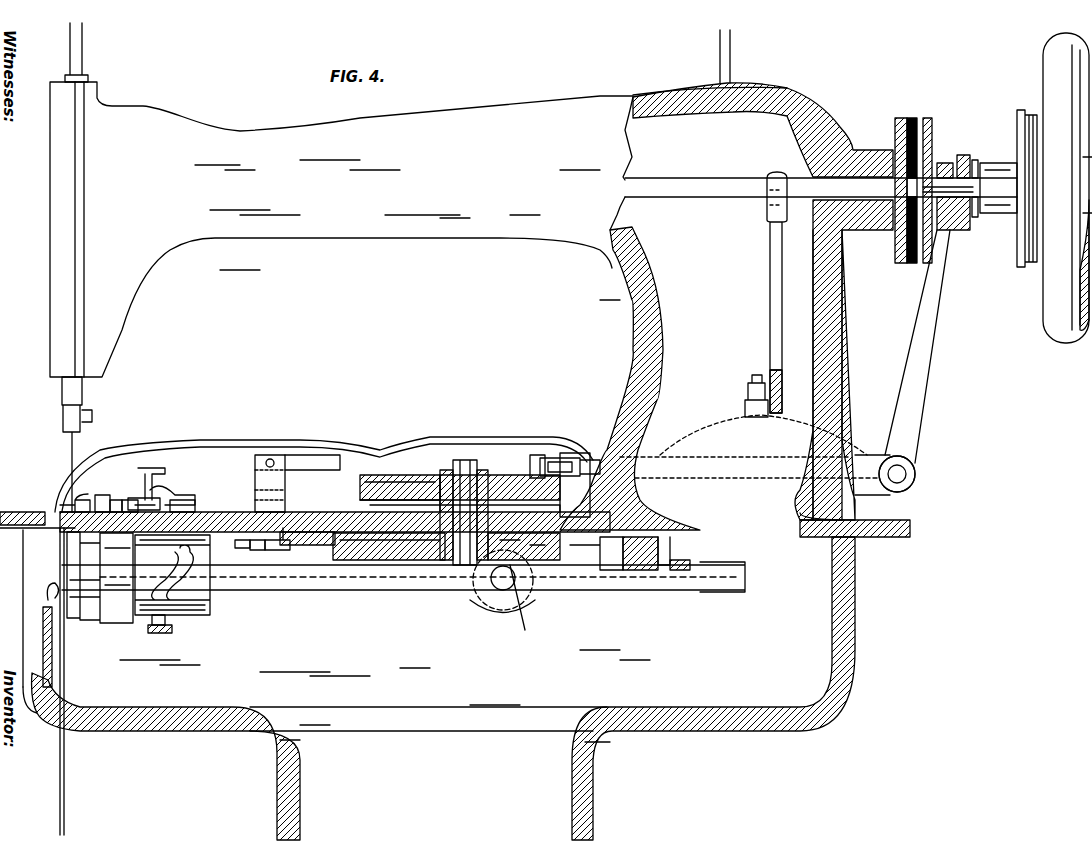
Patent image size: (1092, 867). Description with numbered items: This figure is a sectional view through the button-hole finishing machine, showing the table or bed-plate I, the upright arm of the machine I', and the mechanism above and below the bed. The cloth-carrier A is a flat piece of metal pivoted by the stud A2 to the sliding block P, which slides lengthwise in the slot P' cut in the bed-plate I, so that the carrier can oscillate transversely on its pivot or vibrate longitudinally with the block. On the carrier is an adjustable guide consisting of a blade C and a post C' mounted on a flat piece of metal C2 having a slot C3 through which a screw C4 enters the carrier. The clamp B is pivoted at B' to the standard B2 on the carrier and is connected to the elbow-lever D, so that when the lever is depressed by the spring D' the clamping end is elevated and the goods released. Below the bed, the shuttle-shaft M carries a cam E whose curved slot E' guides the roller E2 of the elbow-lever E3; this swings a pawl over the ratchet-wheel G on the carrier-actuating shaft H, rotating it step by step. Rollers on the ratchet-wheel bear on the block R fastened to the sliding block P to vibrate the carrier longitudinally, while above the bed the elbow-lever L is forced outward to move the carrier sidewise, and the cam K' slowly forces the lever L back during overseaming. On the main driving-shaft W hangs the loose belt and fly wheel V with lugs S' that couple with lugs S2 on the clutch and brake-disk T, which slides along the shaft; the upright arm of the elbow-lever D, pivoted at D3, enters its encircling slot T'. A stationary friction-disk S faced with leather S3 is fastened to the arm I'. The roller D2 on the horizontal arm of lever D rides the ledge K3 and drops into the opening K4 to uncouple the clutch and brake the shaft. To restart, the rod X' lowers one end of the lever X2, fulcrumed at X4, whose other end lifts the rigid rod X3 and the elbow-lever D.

The carrier A is at (45, 508).
The stud A2 is at (325, 545).
The clamp B is at (324, 469).
The pivot B' is at (274, 467).
The standard B2 is at (300, 475).
The blade C is at (75, 495).
The post C' is at (101, 490).
The flat piece of metal C2 is at (108, 500).
The slot C3 is at (121, 500).
The screw C4 is at (140, 498).
The elbow-lever D is at (909, 362).
The spring D' is at (750, 442).
The roller D2 is at (570, 455).
The pivot D3 is at (915, 474).
The cam E is at (90, 681).
The curved slot E' is at (177, 588).
The roller E2 is at (155, 625).
The elbow-lever E3 is at (165, 633).
The ratchet-wheel G is at (370, 545).
The carrier-actuating shaft H is at (462, 468).
The bed-plate I is at (596, 553).
The arm of the machine I' is at (725, 85).
The cam K' is at (465, 483).
The projecting ledge K3 is at (380, 478).
The opening K4 is at (530, 470).
The elbow-lever L is at (240, 505).
The shuttle-shaft M is at (403, 577).
The sliding block P is at (279, 547).
The slot P' is at (241, 553).
The block R is at (260, 553).
The friction-disk S is at (898, 179).
The lugs S' is at (997, 193).
The lugs S2 is at (975, 160).
The leather S3 is at (917, 179).
The clutch and brake-disk T is at (937, 182).
The encircling slot T' is at (953, 180).
The belt and fly wheel V is at (1054, 188).
The main driving-shaft W is at (821, 187).
The rod X' is at (65, 647).
The lever X2 is at (405, 598).
The rigid rod X3 is at (670, 547).
The fulcrum X4 is at (502, 595).